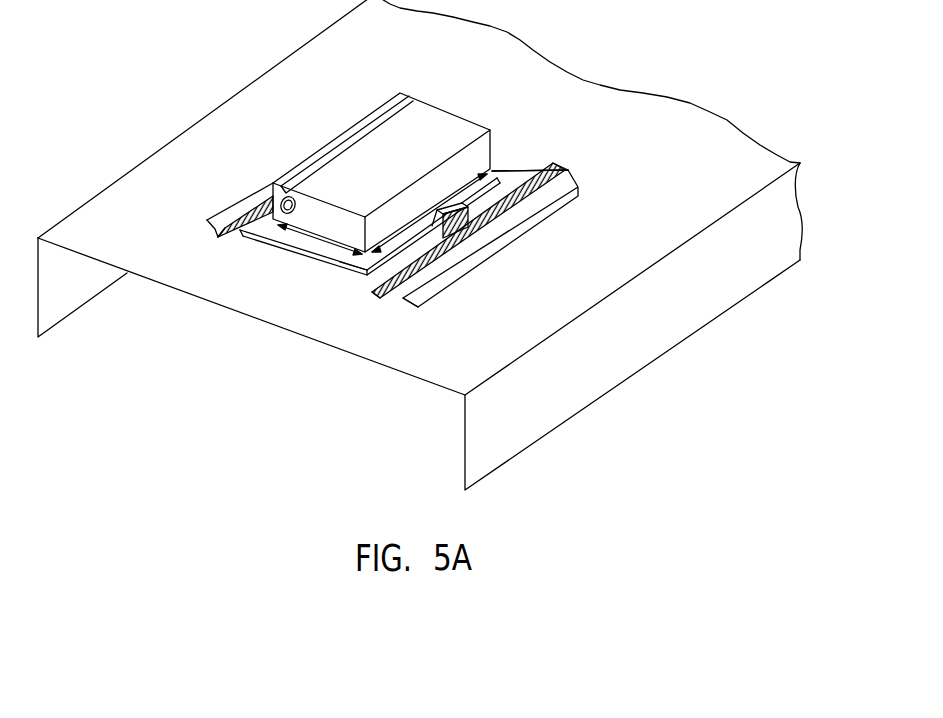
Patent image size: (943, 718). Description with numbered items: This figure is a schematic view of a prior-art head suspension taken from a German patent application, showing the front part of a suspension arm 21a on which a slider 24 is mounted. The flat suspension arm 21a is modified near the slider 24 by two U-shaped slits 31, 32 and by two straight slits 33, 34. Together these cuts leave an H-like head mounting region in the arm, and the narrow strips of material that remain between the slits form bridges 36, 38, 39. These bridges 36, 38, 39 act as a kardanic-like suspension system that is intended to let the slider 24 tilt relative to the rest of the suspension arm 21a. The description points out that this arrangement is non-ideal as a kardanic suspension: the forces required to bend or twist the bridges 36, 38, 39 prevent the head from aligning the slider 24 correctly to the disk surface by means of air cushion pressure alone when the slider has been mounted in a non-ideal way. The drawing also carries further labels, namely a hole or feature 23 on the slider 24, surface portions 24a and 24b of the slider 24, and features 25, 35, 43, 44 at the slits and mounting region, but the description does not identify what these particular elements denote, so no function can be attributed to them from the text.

The suspension arm 21a is at (633, 332).
The hole 23 is at (272, 195).
The slider 24 is at (295, 130).
The rail of block 24a is at (385, 108).
The top surface of block 24b is at (455, 140).
The adhesive layer 25 is at (448, 263).
The U-shaped slit 31 is at (298, 250).
The U-shaped slit 32 is at (510, 170).
The straight slit 33 is at (467, 260).
The straight slit 34 is at (207, 222).
The edge of substrate 35 is at (350, 257).
The bridge 36 is at (470, 208).
The bridge 38 is at (470, 230).
The bridge 39 is at (263, 203).
The end portion of spring member 43 is at (372, 293).
The end portion of left plate 44 is at (217, 237).